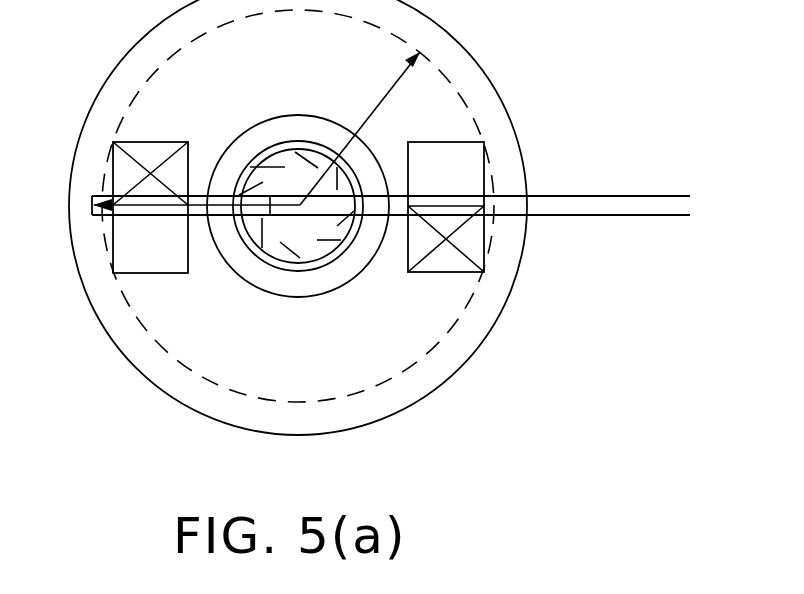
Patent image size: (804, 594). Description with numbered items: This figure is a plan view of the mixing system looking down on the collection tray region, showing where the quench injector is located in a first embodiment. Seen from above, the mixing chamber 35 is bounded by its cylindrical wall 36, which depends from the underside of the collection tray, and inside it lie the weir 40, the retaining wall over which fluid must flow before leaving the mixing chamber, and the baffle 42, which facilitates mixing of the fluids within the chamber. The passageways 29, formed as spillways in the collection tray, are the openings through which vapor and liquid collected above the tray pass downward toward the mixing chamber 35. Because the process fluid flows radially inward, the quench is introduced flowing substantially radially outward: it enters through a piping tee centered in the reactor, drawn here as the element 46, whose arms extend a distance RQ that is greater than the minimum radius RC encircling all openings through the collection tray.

The passageways 29 is at (484, 140).
The mixing chamber 35 is at (287, 153).
The cylindrical wall 36 is at (178, 403).
The weir 40 is at (263, 264).
The baffle 42 is at (317, 302).
The shaft 46 is at (640, 197).
The minimum radius RC is at (298, 206).
The distance RQ is at (195, 209).